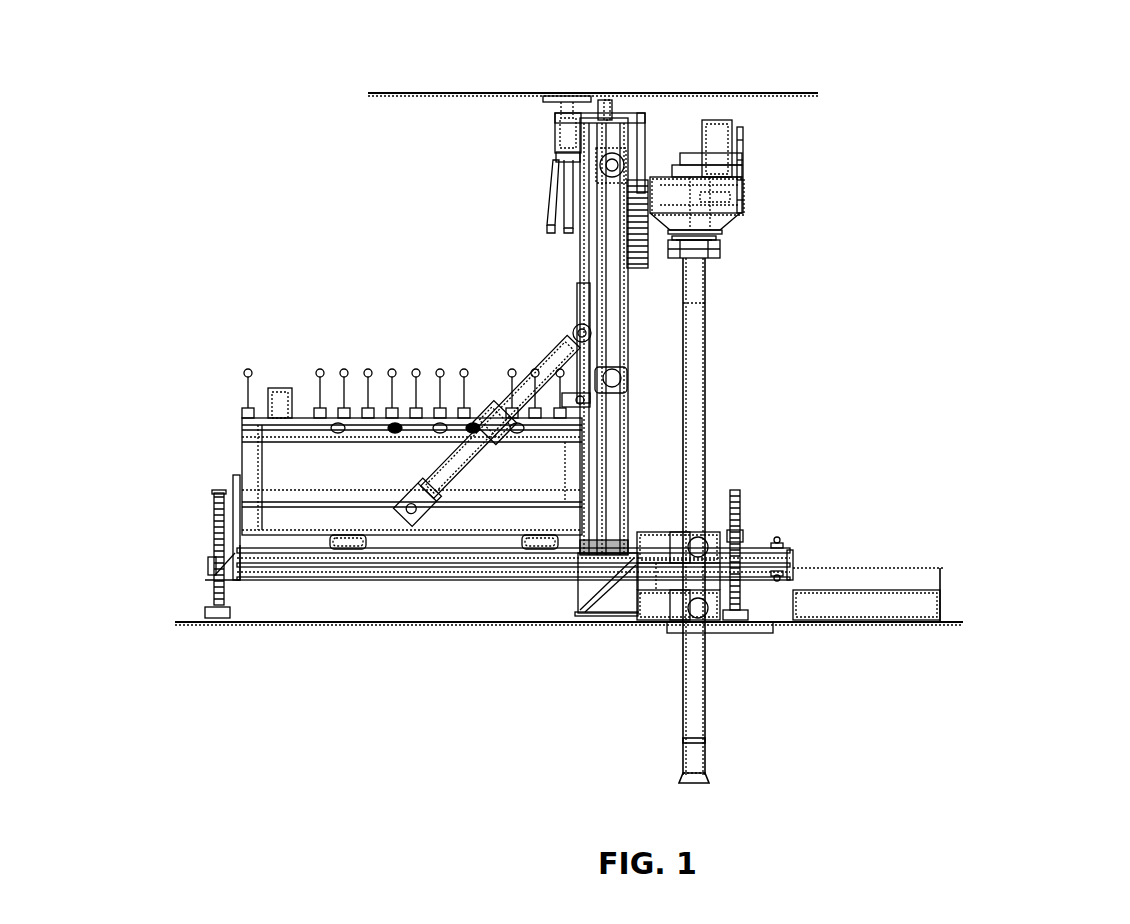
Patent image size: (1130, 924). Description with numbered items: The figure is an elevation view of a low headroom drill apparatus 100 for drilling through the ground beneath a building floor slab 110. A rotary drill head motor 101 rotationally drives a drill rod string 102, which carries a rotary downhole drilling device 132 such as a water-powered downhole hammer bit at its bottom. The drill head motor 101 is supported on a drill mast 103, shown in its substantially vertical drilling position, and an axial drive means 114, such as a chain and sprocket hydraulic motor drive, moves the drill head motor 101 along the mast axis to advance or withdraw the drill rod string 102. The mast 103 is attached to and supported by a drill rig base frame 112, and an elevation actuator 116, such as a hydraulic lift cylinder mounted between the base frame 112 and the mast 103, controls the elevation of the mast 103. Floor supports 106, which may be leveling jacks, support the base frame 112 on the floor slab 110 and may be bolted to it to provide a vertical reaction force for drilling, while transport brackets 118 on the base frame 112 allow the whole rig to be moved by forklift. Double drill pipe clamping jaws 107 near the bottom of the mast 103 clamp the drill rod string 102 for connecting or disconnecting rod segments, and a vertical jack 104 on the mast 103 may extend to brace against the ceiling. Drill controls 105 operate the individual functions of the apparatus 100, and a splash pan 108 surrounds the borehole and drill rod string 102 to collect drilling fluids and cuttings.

The low headroom drill apparatus 100 is at (878, 248).
The rotary drill head motor 101 is at (746, 190).
The drill rod string 102 is at (706, 414).
The drill mast 103 is at (582, 276).
The vertical jack 104 is at (556, 131).
The drill controls 105 is at (303, 417).
The floor supports 106 is at (237, 583).
The double drill pipe clamping jaws 107 is at (668, 612).
The splash pan 108 is at (914, 583).
The floor slab 110 is at (967, 624).
The drill rig base frame 112 is at (233, 533).
The axial drive means 114 is at (618, 150).
The elevation actuator 116 is at (565, 347).
The transport brackets 118 is at (540, 545).
The rotary downhole drilling device 132 is at (683, 749).